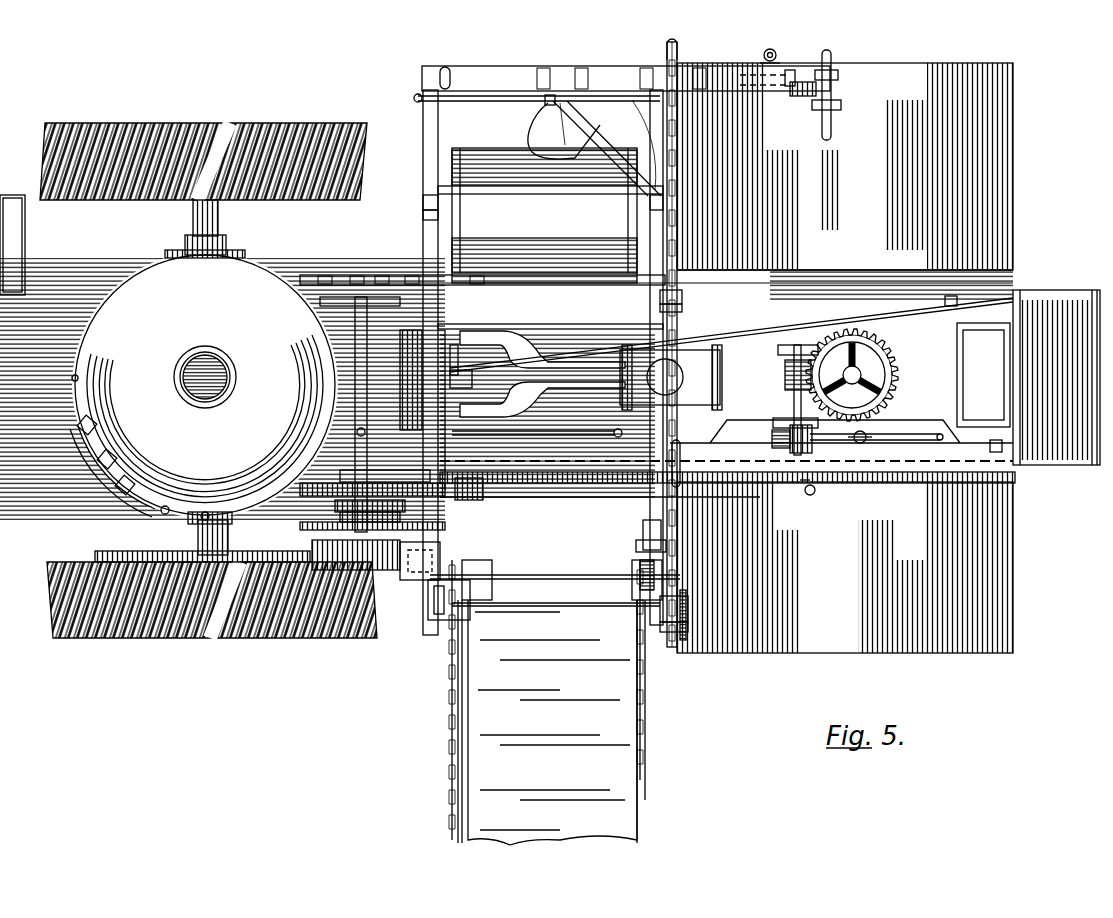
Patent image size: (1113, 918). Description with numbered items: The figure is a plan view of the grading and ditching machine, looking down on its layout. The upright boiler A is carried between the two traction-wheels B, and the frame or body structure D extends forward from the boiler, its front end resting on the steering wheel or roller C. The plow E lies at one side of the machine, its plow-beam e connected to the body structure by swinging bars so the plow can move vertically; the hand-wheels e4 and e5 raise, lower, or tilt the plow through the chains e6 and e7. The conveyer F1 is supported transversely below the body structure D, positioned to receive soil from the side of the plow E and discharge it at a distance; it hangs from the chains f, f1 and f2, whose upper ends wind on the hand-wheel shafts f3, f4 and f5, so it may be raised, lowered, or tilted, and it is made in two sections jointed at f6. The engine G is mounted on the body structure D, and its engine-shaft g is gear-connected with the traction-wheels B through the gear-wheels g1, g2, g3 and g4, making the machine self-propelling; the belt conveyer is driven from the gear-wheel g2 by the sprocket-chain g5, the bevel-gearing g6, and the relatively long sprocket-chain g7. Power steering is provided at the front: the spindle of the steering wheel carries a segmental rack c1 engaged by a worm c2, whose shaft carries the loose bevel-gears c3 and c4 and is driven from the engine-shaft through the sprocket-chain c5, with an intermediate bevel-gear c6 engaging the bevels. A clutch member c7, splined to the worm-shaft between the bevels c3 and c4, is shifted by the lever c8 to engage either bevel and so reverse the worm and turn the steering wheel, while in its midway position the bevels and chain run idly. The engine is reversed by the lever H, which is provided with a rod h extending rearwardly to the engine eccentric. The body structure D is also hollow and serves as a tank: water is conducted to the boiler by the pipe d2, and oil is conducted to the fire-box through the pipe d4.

The upright boiler A is at (203, 377).
The traction-wheels B is at (210, 126).
The steering wheel or roller C is at (860, 372).
The segmental rack c1 is at (876, 408).
The worm c2 is at (786, 372).
The bevel-gear c3 is at (790, 428).
The bevel-gear c4 is at (808, 446).
The sprocket-chain c5 is at (748, 468).
The intermediate bevel-gear c6 is at (773, 440).
The clutch member c7 is at (812, 444).
The lever c8 is at (928, 444).
The frame or body structure D is at (332, 357).
The pipe d2 is at (566, 446).
The pipe d4 is at (590, 500).
The plow E is at (594, 145).
The plow-beam e is at (702, 70).
The hand-wheel e4 is at (666, 60).
The hand-wheel e5 is at (832, 62).
The chain e6 is at (790, 88).
The chain e7 is at (450, 82).
The conveyer F1 is at (557, 702).
The chain f is at (462, 190).
The chain f1 is at (1002, 444).
The chain f2 is at (458, 660).
The hand-wheel shaft f3 is at (690, 608).
The hand-wheel shaft f4 is at (677, 300).
The hand-wheel shaft f5 is at (678, 182).
The joint f6 is at (652, 532).
The engine G is at (690, 366).
The engine-shaft g is at (372, 352).
The gear-wheel g1 is at (480, 497).
The gear-wheel g2 is at (290, 470).
The gear-wheel g3 is at (341, 514).
The gear-wheel g4 is at (140, 553).
The sprocket-chain g5 is at (335, 528).
The bevel-gearing g6 is at (410, 576).
The sprocket-chain g7 is at (440, 620).
The lever H is at (1018, 296).
The rod h is at (902, 333).